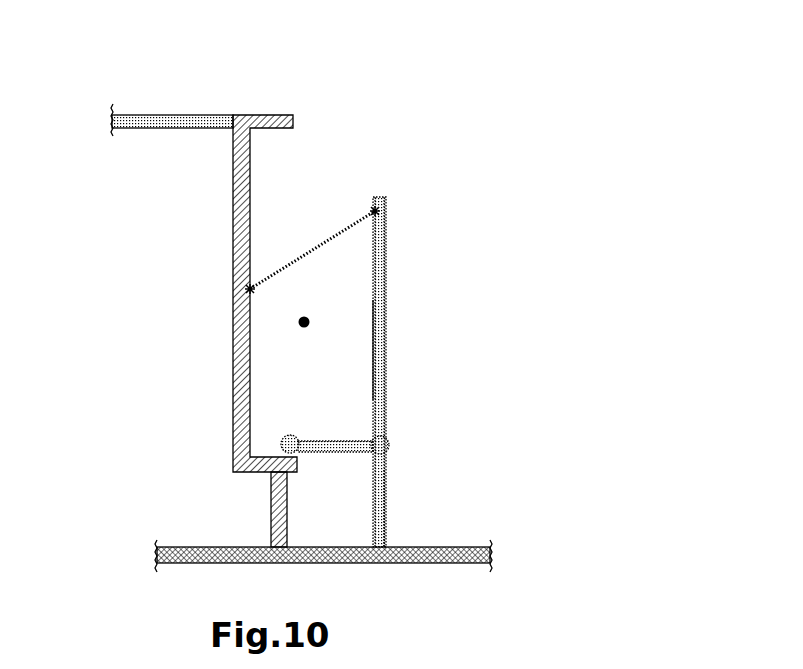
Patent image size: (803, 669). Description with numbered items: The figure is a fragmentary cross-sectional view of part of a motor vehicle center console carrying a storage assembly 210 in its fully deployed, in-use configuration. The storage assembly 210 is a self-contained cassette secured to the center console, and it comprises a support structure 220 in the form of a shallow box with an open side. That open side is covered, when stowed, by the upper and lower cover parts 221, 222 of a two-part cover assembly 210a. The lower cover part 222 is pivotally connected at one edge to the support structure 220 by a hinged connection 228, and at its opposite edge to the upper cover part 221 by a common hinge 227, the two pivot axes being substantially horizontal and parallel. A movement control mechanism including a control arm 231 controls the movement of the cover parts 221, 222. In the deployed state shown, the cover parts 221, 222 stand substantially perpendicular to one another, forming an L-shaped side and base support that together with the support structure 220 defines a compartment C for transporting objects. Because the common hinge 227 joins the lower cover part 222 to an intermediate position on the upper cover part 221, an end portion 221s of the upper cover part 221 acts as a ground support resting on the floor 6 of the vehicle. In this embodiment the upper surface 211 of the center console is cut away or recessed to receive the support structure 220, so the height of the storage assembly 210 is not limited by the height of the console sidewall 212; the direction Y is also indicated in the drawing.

The floor 6 is at (221, 548).
The upper surface of the center console 211 is at (179, 117).
The direction Y is at (292, 100).
The support structure 220 is at (233, 273).
The sidewall of the center console 212 is at (283, 520).
The hinged connection 228 is at (279, 442).
The lower cover part 222 is at (327, 441).
The common hinge 227 is at (387, 440).
The upper cover part 221 is at (385, 270).
The end portion of the upper cover part 221s is at (384, 513).
The storage assembly 210 is at (436, 268).
The cover assembly 210a is at (401, 353).
The control arm 231 is at (292, 262).
The compartment C is at (304, 322).